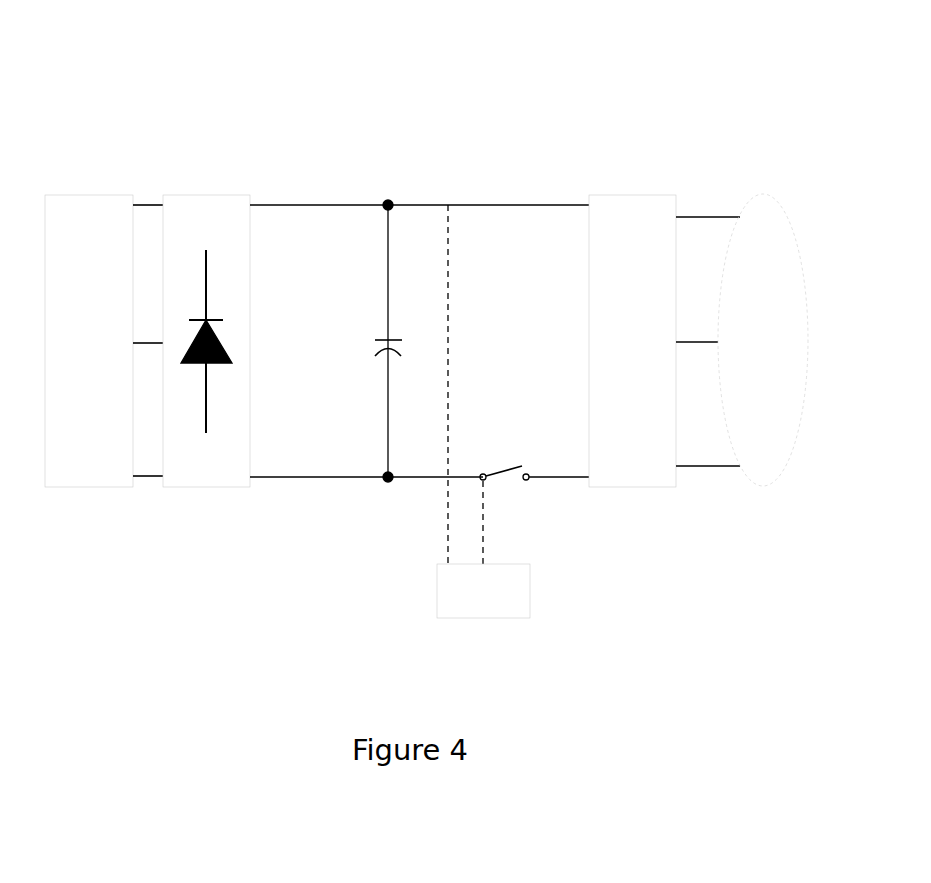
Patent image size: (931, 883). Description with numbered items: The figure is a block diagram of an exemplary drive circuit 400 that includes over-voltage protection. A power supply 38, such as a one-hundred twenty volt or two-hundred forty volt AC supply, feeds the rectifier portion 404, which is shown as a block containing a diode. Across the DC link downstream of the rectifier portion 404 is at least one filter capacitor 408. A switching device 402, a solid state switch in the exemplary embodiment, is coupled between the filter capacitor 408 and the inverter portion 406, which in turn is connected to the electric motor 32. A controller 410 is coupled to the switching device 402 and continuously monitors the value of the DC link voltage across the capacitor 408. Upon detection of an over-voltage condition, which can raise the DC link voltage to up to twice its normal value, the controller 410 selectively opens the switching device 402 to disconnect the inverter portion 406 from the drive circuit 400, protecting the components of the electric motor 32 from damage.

The drive circuit 400 is at (228, 52).
The power supply 38 is at (79, 336).
The rectifier portion 404 is at (186, 488).
The filter capacitor 408 is at (372, 341).
The switching device 402 is at (513, 478).
The controller 410 is at (467, 602).
The inverter portion 406 is at (616, 344).
The electric motor 32 is at (752, 344).